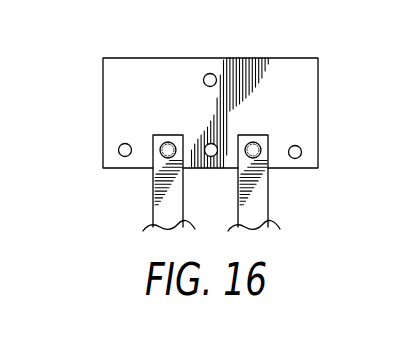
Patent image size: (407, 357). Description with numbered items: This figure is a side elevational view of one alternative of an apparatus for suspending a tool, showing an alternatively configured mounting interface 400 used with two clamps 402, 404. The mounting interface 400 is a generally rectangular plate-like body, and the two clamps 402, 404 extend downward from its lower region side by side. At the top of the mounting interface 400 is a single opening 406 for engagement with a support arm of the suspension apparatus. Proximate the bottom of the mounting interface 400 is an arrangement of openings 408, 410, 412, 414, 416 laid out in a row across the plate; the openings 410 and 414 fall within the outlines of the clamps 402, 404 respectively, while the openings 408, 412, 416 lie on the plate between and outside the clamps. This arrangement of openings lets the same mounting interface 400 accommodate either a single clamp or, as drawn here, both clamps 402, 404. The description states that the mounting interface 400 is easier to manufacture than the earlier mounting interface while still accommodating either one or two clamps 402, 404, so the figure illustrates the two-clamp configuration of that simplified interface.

The mounting interface 400 is at (172, 48).
The clamp 402 is at (153, 199).
The clamp 404 is at (269, 201).
The single opening 406 is at (214, 74).
The opening 408 is at (120, 146).
The opening 410 is at (162, 144).
The opening 412 is at (214, 144).
The opening 414 is at (260, 156).
The opening 416 is at (302, 152).